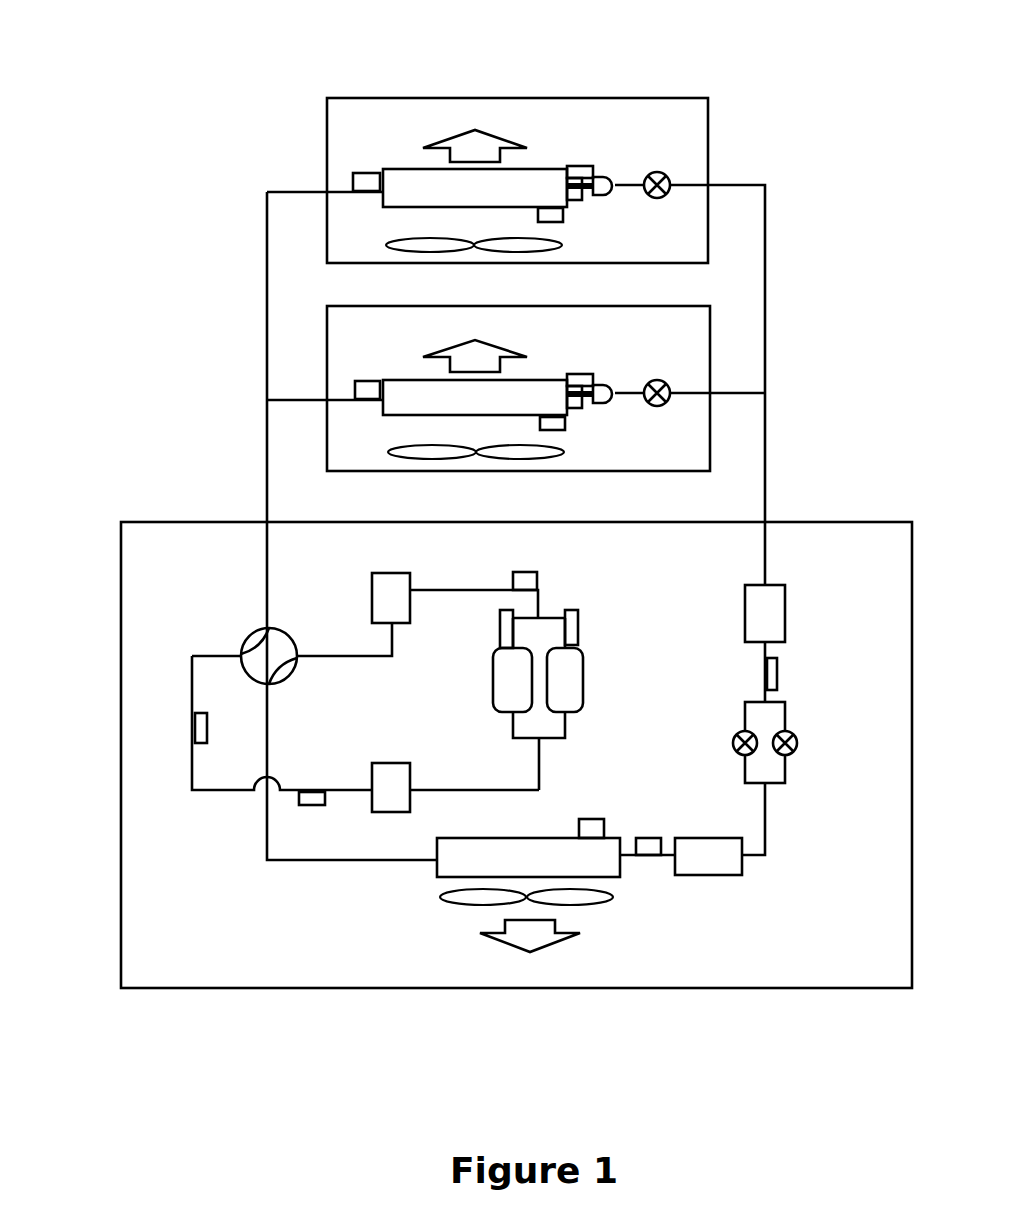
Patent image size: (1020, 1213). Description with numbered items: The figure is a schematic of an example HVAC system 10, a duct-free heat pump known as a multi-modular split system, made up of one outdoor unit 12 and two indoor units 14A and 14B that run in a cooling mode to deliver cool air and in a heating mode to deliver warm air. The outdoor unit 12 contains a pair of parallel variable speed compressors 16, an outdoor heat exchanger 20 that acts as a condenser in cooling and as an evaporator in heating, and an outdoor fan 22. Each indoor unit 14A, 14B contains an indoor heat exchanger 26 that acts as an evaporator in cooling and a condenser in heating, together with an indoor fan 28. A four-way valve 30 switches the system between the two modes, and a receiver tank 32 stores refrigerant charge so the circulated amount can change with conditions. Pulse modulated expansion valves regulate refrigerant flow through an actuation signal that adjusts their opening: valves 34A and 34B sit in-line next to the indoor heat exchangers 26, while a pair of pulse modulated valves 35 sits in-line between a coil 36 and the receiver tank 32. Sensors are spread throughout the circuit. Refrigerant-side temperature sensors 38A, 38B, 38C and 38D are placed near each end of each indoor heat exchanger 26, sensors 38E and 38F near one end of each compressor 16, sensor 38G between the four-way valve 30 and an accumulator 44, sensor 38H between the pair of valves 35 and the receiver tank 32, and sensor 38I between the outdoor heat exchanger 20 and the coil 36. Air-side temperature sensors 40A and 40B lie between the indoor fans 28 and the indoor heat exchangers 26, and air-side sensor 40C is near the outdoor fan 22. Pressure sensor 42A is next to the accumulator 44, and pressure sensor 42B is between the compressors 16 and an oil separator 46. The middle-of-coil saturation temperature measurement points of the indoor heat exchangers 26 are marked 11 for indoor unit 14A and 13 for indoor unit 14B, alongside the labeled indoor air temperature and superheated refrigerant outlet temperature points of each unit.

The HVAC system 10 is at (562, 66).
The middle of indoor coil temperature measurement point 11 is at (497, 206).
The outdoor unit 12 is at (119, 570).
The middle of indoor coil temperature measurement point 13 is at (497, 415).
The indoor unit 14A is at (325, 157).
The indoor unit 14B is at (325, 367).
The compressors 16 is at (490, 686).
The outdoor heat exchanger 20 is at (433, 862).
The outdoor fan 22 is at (450, 902).
The indoor heat exchanger 26 is at (451, 320).
The indoor fan 28 is at (420, 252).
The 4-way valve 30 is at (245, 638).
The receiver tank 32 is at (787, 605).
The pulse modulated valve 34A is at (673, 178).
The pulse modulated valve 34B is at (658, 378).
The pair of pulse modulated valves 35 is at (757, 753).
The coil 36 is at (715, 879).
The refrigerant-side temperature sensor 38A is at (360, 196).
The refrigerant-side temperature sensor 38B is at (586, 196).
The refrigerant-side temperature sensor 38C is at (362, 404).
The refrigerant-side temperature sensor 38D is at (586, 404).
The refrigerant-side temperature sensor 38E is at (498, 626).
The refrigerant-side temperature sensor 38F is at (580, 626).
The refrigerant-side temperature sensor 38G is at (192, 726).
The refrigerant-side temperature sensor 38H is at (780, 676).
The refrigerant-side temperature sensor 38I is at (655, 836).
The air-side temperature sensor 40A is at (565, 224).
The air-side temperature sensor 40B is at (565, 432).
The air-side temperature sensor 40C is at (592, 817).
The pressure sensor 42A is at (313, 808).
The pressure sensor 42B is at (535, 572).
The accumulator 44 is at (378, 762).
The oil separator 46 is at (375, 573).